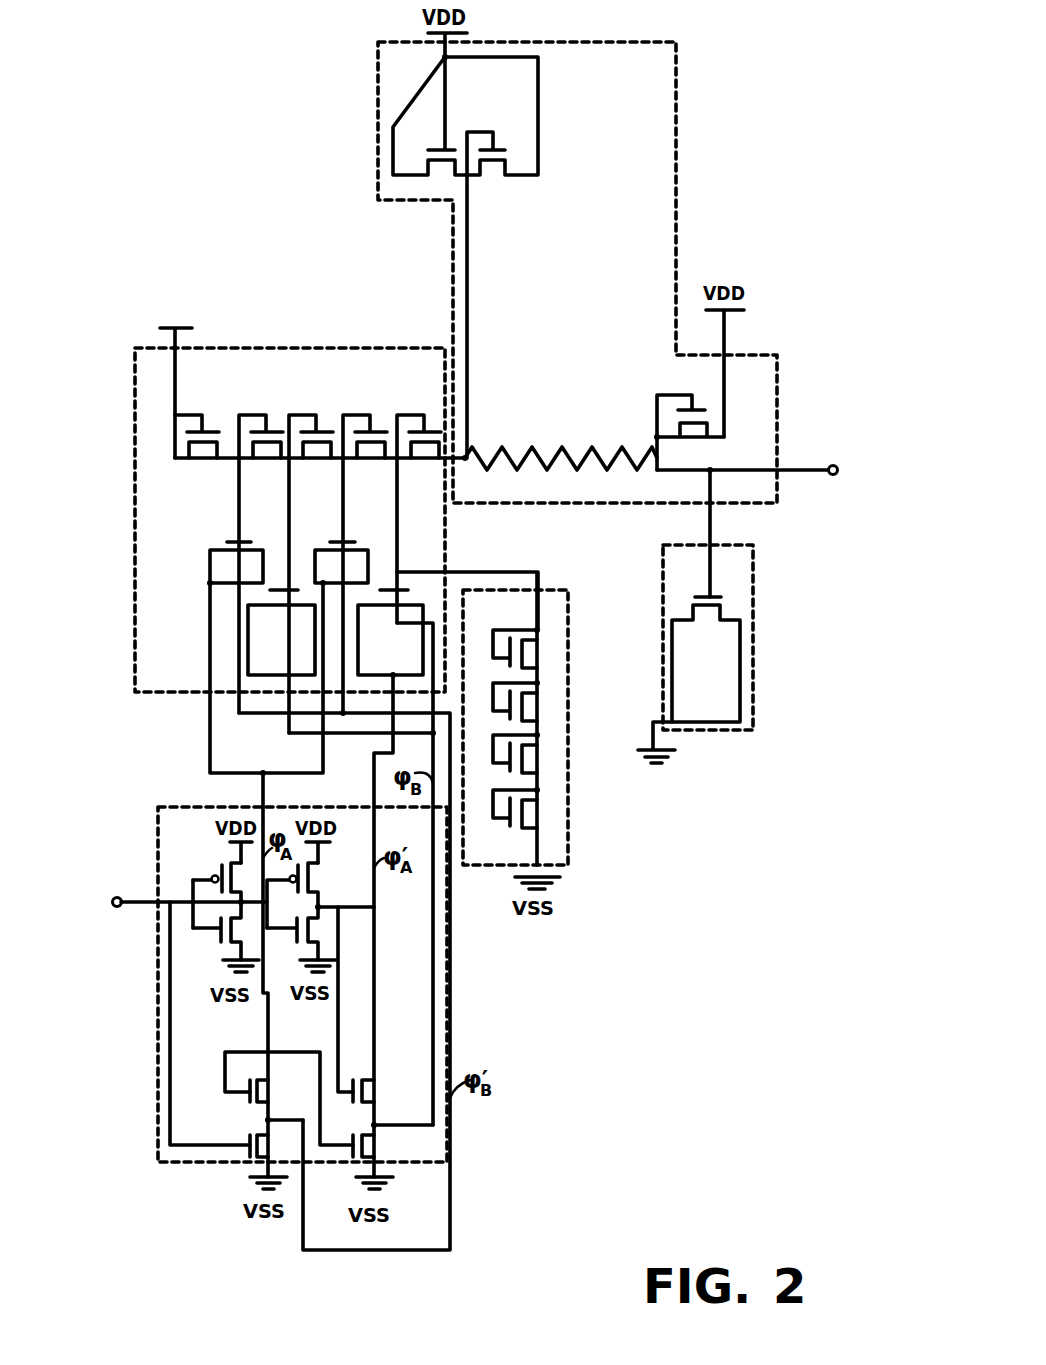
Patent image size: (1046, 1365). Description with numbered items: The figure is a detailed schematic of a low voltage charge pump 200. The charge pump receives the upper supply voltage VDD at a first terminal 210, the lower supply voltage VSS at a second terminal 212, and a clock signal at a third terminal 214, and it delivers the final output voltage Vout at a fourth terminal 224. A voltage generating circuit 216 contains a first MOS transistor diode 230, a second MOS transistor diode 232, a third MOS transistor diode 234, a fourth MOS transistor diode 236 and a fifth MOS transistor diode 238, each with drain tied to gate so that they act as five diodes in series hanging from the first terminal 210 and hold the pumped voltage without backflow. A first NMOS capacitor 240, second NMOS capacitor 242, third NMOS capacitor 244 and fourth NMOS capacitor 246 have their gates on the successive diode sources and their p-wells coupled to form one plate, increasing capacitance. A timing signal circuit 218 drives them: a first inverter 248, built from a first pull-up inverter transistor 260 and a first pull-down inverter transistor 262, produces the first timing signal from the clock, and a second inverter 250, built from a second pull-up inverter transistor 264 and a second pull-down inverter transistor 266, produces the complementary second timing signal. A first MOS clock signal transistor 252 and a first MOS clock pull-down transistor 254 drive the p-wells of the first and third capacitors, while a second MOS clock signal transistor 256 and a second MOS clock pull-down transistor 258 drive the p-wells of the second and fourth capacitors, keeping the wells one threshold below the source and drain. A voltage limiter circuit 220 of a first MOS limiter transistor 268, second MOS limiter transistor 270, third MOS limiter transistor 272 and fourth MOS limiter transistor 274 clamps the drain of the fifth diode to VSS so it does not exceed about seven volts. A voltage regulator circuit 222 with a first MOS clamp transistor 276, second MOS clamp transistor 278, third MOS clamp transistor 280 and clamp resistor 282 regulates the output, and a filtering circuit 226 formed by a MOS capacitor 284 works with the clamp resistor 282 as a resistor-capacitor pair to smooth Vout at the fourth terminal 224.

The low voltage charge pump 200 is at (732, 24).
The first terminal 210 is at (178, 335).
The second terminal 212 is at (657, 740).
The third terminal 214 is at (145, 908).
The voltage generating circuit 216 is at (135, 489).
The timing signal circuit 218 is at (158, 1113).
The voltage limiter circuit 220 is at (625, 832).
The voltage regulator circuit 222 is at (732, 204).
The fourth terminal 224 is at (787, 468).
The filtering circuit 226 is at (753, 560).
The first MOS transistor diode 230 is at (220, 428).
The second MOS transistor diode 232 is at (276, 428).
The third MOS transistor diode 234 is at (326, 428).
The fourth MOS transistor diode 236 is at (380, 428).
The fifth MOS transistor diode 238 is at (427, 428).
The first NMOS capacitor 240 is at (232, 540).
The second NMOS capacitor 242 is at (278, 588).
The third NMOS capacitor 244 is at (339, 540).
The fourth NMOS capacitor 246 is at (396, 588).
The first inverter 248 is at (193, 880).
The second inverter 250 is at (319, 907).
The first MOS clock signal transistor 252 is at (250, 1101).
The first MOS clock pull-down transistor 254 is at (250, 1154).
The second MOS clock signal transistor 256 is at (353, 1101).
The second MOS clock pull-down transistor 258 is at (353, 1154).
The first pull-up inverter transistor 260 is at (212, 876).
The first pull-down inverter transistor 262 is at (220, 932).
The second pull-up inverter transistor 264 is at (292, 895).
The second pull-down inverter transistor 266 is at (297, 931).
The first MOS limiter transistor 268 is at (509, 665).
The second MOS limiter transistor 270 is at (509, 717).
The third MOS limiter transistor 272 is at (509, 769).
The fourth MOS limiter transistor 274 is at (508, 822).
The first MOS clamp transistor 276 is at (440, 148).
The second MOS clamp transistor 278 is at (497, 138).
The third MOS clamp transistor 280 is at (691, 426).
The clamp resistor 282 is at (580, 446).
The MOS capacitor 284 is at (701, 597).